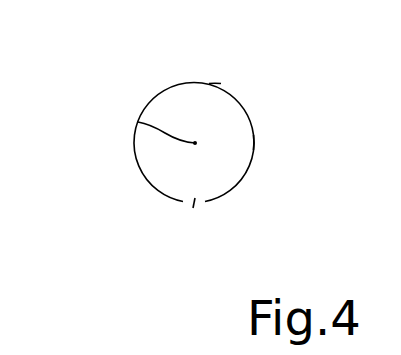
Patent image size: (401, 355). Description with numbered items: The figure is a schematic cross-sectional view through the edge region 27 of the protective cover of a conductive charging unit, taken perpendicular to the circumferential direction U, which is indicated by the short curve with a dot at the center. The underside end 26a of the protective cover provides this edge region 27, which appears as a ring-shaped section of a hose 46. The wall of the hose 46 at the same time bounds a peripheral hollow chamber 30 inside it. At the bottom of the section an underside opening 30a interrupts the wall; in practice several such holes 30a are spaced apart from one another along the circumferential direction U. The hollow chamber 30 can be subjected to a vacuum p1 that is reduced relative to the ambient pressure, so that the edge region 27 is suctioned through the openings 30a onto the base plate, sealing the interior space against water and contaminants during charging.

The underside end 26a is at (149, 115).
The edge region 27 is at (143, 93).
The hose 46 is at (215, 83).
The hollow chamber 30 is at (303, 156).
The vacuum p1 is at (240, 145).
The underside opening 30a is at (193, 208).
The circumferential direction U is at (138, 122).